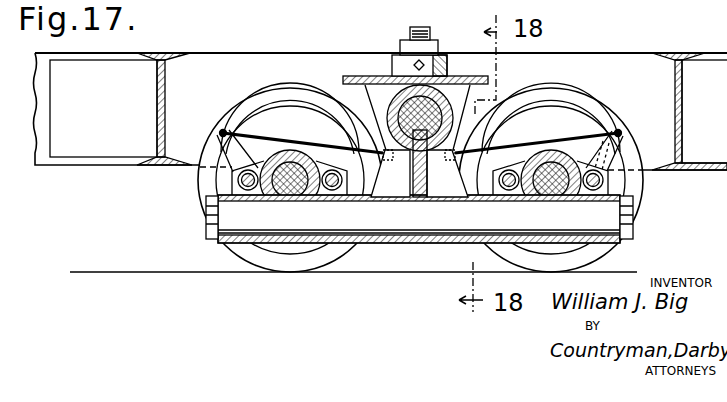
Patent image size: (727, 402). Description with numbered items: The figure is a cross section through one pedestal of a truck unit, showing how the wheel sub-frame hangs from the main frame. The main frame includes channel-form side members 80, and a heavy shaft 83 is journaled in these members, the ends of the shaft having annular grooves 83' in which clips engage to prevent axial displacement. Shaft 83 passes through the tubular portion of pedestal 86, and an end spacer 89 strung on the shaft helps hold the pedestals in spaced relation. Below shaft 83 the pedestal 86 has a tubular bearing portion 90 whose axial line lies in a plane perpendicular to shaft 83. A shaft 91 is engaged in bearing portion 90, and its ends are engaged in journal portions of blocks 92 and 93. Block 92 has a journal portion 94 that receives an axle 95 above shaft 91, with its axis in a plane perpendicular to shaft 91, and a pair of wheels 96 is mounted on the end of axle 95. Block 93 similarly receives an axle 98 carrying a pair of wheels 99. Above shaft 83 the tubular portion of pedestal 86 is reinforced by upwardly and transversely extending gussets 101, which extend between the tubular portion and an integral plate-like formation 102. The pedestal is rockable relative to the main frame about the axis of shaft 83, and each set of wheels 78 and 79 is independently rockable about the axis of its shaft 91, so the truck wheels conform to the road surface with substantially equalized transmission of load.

The set of wheels 78 is at (310, 266).
The set of wheels 79 is at (612, 252).
The side member 80 is at (614, 11).
The heavy shaft 83 is at (417, 134).
The annular groove 83' is at (407, 11).
The pedestal 86 is at (442, 182).
The end spacer 89 is at (350, 8).
The tubular bearing portion 90 is at (419, 253).
The shaft 91 is at (362, 215).
The block 92 is at (252, 215).
The block 93 is at (558, 158).
The journal portion 94 is at (290, 150).
The axle 95 is at (288, 197).
The pair of wheels 96 is at (207, 182).
The axle 98 is at (520, 166).
The pair of wheels 99 is at (632, 188).
The gusset 101 is at (447, 72).
The plate-like formation 102 is at (396, 76).